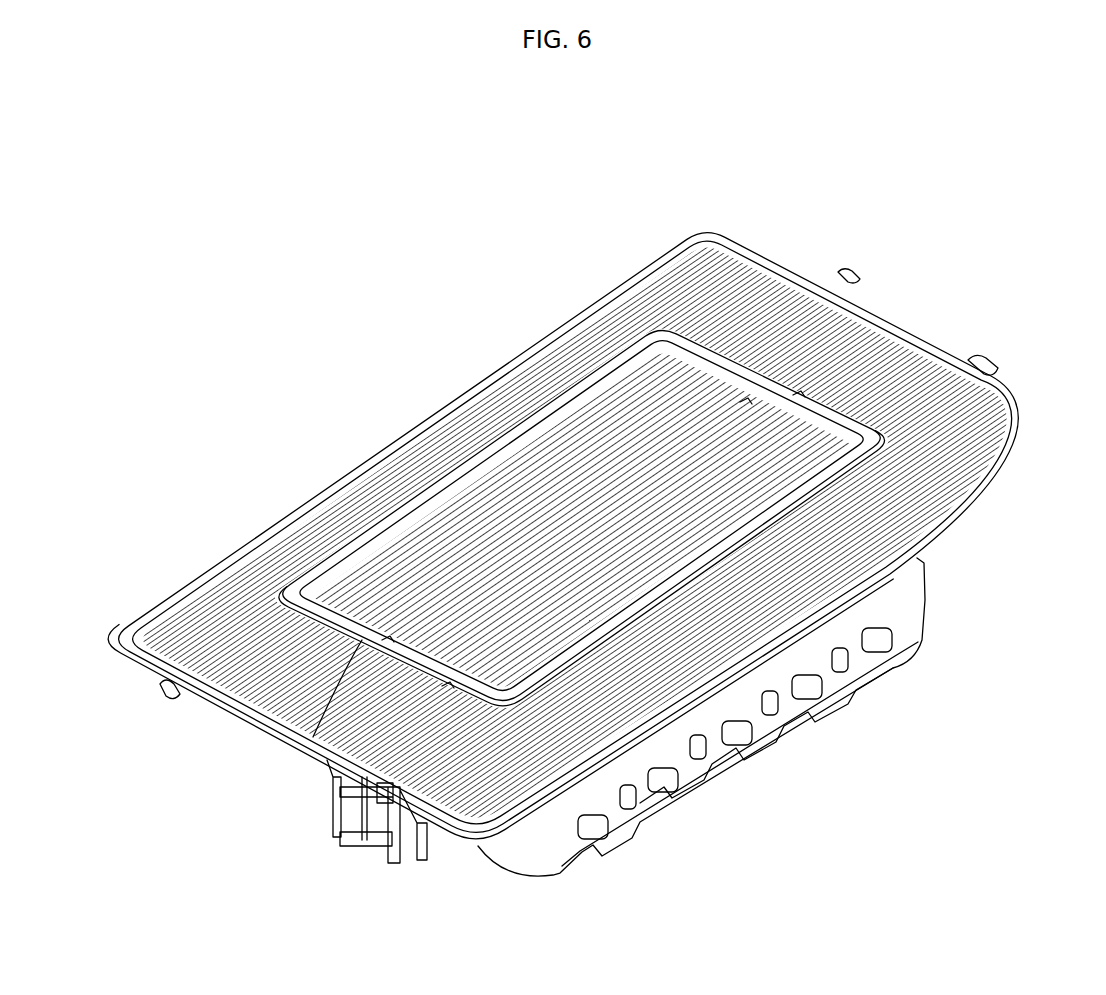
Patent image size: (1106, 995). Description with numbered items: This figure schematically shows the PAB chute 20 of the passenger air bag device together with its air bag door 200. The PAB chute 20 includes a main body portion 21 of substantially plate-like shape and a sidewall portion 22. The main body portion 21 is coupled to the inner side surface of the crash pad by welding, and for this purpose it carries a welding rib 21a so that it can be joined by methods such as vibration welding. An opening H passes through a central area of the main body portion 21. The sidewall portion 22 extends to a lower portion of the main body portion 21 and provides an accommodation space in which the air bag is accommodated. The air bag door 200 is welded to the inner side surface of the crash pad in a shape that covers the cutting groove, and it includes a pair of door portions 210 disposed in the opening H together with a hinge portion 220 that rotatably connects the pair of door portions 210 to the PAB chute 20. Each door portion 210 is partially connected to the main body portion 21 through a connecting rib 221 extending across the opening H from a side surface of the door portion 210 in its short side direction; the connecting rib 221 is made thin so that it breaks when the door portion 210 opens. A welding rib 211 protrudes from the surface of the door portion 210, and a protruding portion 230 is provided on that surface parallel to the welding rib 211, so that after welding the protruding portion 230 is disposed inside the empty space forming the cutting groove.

The PAB chute 20 is at (508, 314).
The main body portion 21 is at (230, 574).
The welding rib 21a is at (993, 370).
The sidewall portion 22 is at (907, 591).
The air bag door 200 is at (355, 552).
The door portion 210 is at (262, 575).
The welding rib 211 is at (797, 397).
The hinge portion 220 is at (492, 462).
The connecting rib 221 is at (317, 742).
The protruding portion 230 is at (745, 405).
The opening H is at (845, 447).